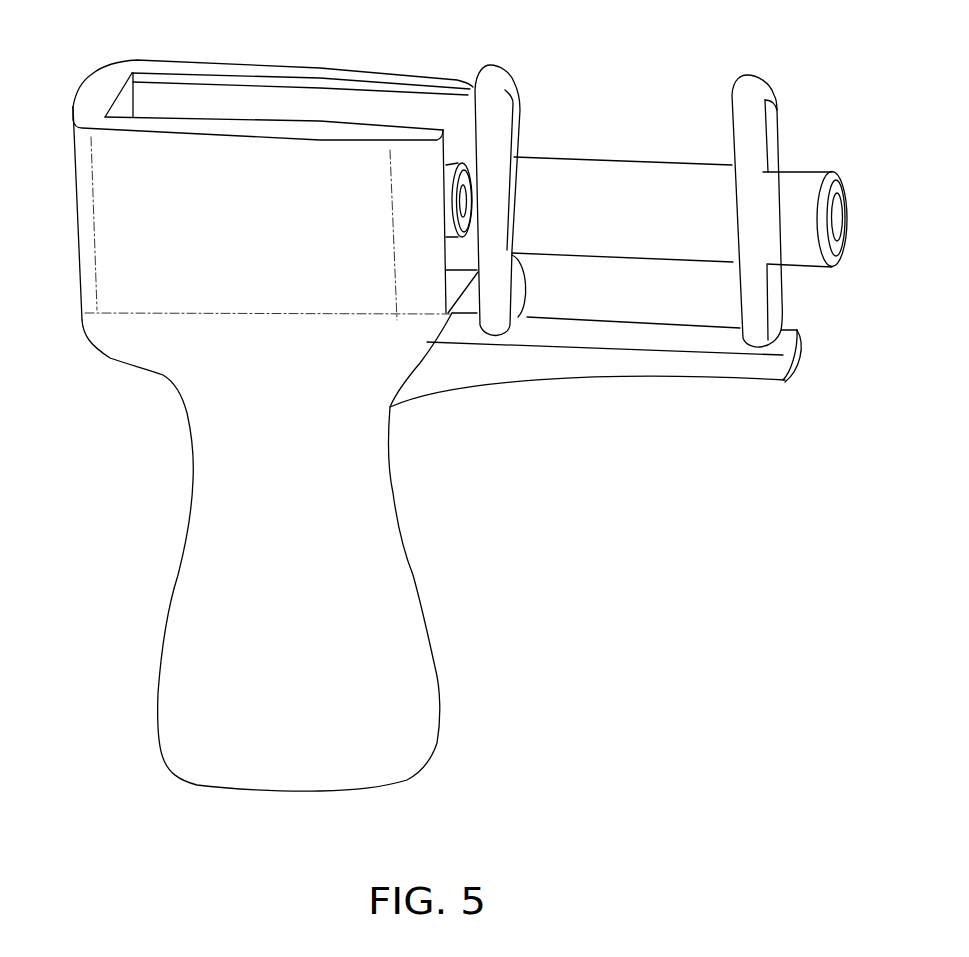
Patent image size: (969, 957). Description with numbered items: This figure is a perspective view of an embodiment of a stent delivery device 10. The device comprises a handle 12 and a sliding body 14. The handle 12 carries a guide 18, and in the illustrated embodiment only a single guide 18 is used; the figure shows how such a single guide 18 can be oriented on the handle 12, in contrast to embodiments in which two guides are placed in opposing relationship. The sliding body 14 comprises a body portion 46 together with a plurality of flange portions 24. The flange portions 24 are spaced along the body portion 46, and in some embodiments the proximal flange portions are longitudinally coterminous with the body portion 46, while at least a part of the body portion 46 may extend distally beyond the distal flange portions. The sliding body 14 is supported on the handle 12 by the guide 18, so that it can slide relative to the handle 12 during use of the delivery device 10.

The stent delivery device 10 is at (447, 405).
The handle 12 is at (397, 523).
The sliding body 14 is at (661, 183).
The guide 18 is at (678, 370).
The flange portions 24 is at (513, 112).
The body portion 46 is at (628, 115).